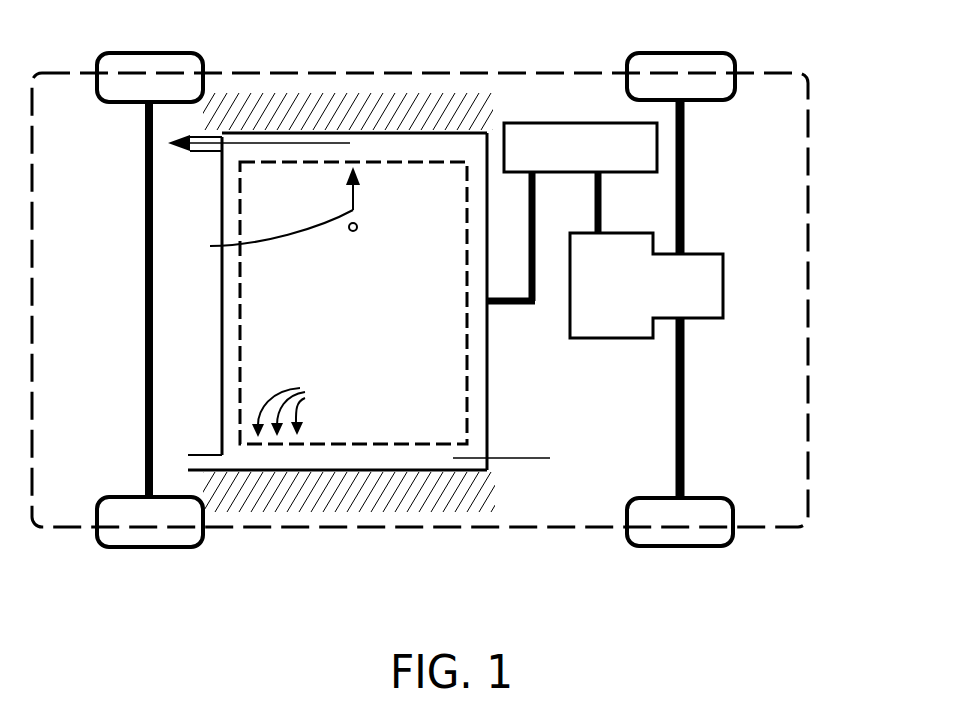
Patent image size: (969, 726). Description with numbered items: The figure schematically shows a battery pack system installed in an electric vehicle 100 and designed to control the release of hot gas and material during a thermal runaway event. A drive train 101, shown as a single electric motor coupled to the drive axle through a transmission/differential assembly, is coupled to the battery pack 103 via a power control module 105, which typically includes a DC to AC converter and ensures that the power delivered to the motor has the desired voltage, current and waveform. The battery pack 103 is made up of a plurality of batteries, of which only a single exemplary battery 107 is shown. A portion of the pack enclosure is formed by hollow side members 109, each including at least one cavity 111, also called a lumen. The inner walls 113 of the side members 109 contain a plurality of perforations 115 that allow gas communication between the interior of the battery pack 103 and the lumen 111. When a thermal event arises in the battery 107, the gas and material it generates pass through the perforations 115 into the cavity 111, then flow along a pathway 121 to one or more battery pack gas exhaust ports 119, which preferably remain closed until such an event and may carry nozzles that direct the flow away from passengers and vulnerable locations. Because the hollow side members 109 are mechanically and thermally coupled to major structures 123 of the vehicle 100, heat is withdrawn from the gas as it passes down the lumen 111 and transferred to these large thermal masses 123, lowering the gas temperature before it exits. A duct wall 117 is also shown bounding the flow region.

The electric vehicle 100 is at (816, 128).
The drive train 101 is at (611, 233).
The battery pack 103 is at (378, 317).
The power control module 105 is at (532, 123).
The battery 107 is at (358, 226).
The side members 109 is at (408, 126).
The cavity 111 is at (487, 405).
The inner walls 113 is at (362, 444).
The perforations 115 is at (304, 404).
The duct wall 117 is at (220, 347).
The battery pack gas exhaust ports 119 is at (205, 150).
The pathway 121 is at (305, 143).
The major structures 123 is at (373, 124).